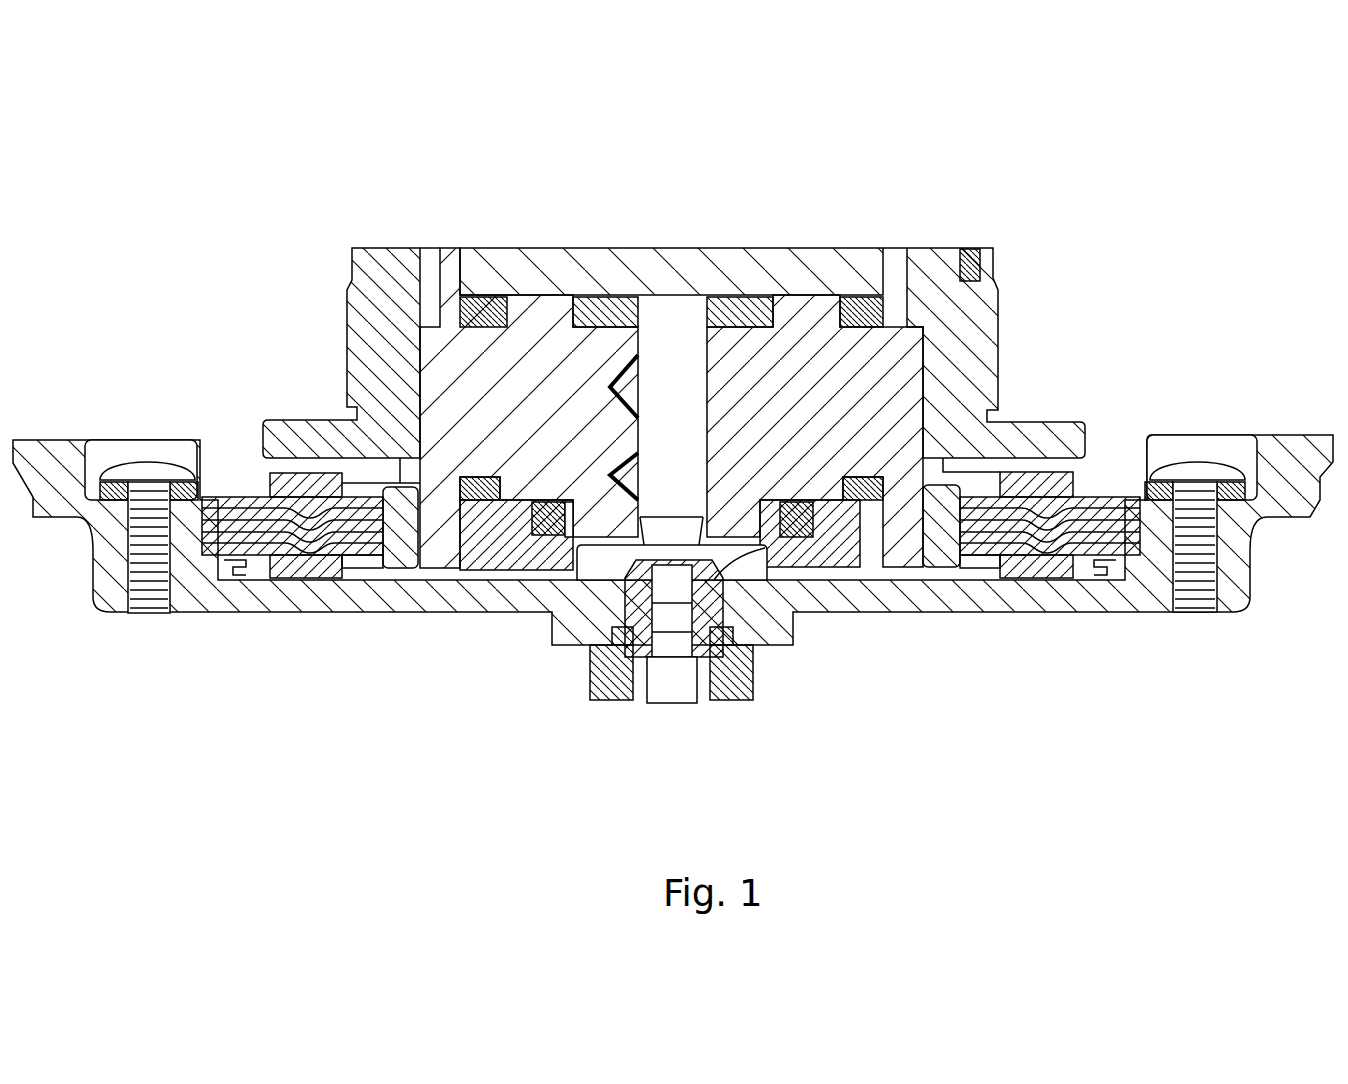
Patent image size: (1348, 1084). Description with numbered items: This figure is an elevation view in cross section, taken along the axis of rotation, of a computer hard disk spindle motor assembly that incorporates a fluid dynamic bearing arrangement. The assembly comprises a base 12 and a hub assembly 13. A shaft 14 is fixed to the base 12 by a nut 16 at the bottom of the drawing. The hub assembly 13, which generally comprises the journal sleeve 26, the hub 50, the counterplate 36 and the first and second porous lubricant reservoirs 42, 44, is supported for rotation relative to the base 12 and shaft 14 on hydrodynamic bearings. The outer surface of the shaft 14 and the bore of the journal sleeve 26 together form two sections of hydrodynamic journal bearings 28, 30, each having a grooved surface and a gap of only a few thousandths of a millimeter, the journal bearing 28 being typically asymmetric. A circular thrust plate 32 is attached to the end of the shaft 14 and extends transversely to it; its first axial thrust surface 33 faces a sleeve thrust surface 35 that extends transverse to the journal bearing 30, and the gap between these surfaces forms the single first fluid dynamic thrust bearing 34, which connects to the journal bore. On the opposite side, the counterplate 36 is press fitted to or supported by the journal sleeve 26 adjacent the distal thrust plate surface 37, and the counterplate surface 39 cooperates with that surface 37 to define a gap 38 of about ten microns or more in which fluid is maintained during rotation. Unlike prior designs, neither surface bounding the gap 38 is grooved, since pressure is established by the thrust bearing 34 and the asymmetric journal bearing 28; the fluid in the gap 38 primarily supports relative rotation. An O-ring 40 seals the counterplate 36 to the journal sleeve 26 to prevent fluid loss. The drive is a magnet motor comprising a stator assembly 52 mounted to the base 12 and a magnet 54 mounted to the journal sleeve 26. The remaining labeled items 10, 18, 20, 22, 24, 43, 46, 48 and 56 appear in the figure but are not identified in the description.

The seal assembly 10 is at (230, 214).
The base 12 is at (970, 615).
The hub assembly 13 is at (1150, 287).
The shaft 14 is at (713, 297).
The nut 16 is at (746, 703).
The bore 18 is at (651, 297).
The shaft opening 20 is at (673, 297).
The seal ring 22 is at (684, 297).
The body portion 24 is at (712, 433).
The journal sleeve 26 is at (612, 387).
The hydrodynamic journal bearing 28 is at (610, 477).
The hydrodynamic journal bearing 30 is at (428, 395).
The thrust plate 32 is at (578, 297).
The first axial thrust surface 33 is at (591, 297).
The first fluid dynamic thrust bearing 34 is at (512, 248).
The sleeve thrust surface 35 is at (640, 358).
The counterplate 36 is at (470, 248).
The thrust plate surface 37 is at (609, 297).
The gap 38 is at (624, 297).
The counterplate surface 39 is at (754, 297).
The O-ring 40 is at (888, 250).
The first porous lubricant reservoir 42 is at (868, 297).
The seal 43 is at (783, 297).
The second porous lubricant reservoir 44 is at (810, 557).
The retainer block 46 is at (516, 505).
The seal 48 is at (486, 497).
The hub 50 is at (998, 297).
The stator assembly 52 is at (303, 580).
The magnet 54 is at (388, 580).
The plate 56 is at (760, 550).